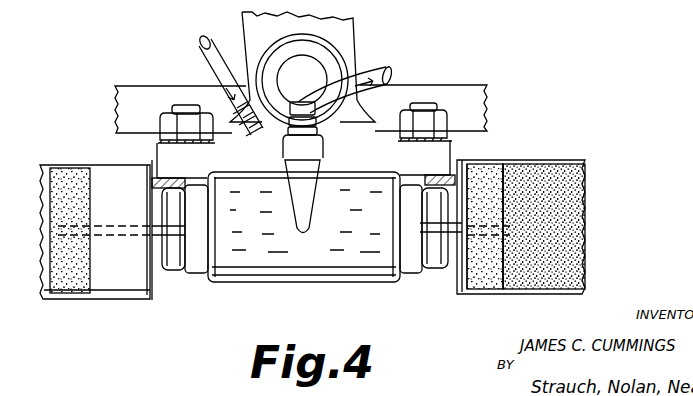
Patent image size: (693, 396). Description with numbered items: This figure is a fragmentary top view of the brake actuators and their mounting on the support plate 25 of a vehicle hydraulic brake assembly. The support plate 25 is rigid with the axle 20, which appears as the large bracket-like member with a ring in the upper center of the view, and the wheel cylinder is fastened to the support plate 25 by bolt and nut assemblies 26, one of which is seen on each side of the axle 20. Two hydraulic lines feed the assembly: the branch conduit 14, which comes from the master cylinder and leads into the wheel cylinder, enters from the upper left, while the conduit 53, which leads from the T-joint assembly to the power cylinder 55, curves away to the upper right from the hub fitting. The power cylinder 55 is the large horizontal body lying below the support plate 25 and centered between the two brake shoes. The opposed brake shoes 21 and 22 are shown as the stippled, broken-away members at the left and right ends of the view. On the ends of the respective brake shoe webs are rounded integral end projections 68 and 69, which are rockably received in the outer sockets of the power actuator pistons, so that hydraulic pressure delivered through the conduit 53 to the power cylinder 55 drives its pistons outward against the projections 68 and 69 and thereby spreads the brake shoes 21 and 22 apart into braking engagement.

The branch conduit 14 is at (219, 40).
The axle 20 is at (352, 41).
The conduit 53 is at (390, 67).
The bolt and nut assemblies 26 is at (183, 128).
The support plate 25 is at (437, 176).
The brake shoe 21 is at (122, 285).
The brake shoe 22 is at (493, 282).
The rounded integral end projection 68 is at (173, 270).
The rounded integral end projection 69 is at (438, 228).
The power cylinder 55 is at (251, 268).